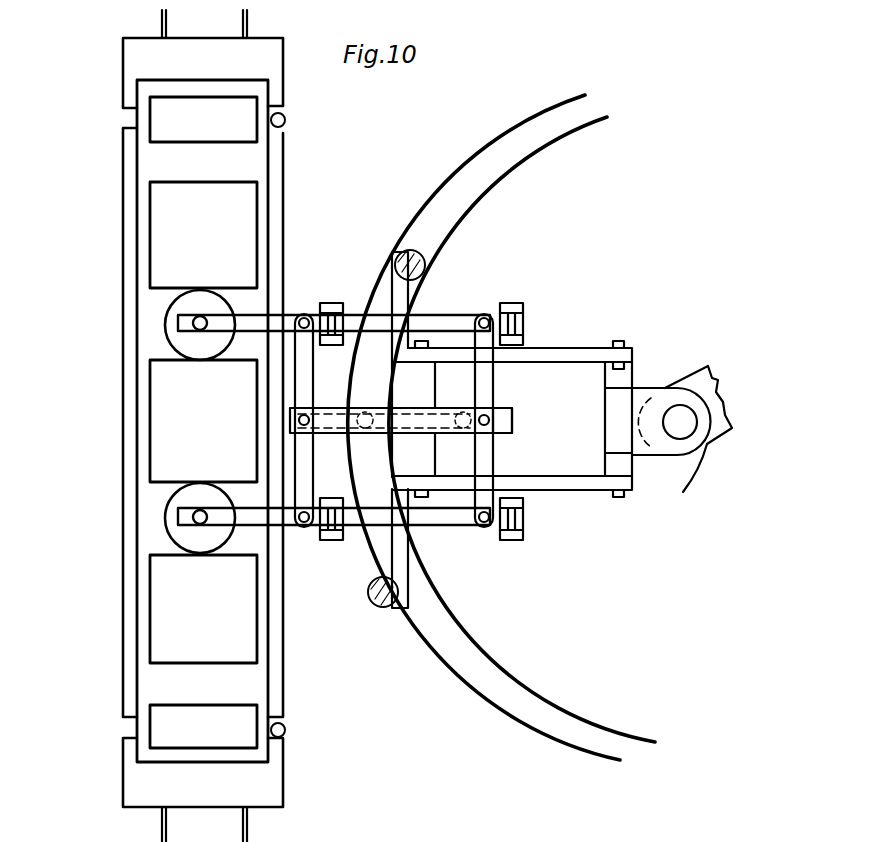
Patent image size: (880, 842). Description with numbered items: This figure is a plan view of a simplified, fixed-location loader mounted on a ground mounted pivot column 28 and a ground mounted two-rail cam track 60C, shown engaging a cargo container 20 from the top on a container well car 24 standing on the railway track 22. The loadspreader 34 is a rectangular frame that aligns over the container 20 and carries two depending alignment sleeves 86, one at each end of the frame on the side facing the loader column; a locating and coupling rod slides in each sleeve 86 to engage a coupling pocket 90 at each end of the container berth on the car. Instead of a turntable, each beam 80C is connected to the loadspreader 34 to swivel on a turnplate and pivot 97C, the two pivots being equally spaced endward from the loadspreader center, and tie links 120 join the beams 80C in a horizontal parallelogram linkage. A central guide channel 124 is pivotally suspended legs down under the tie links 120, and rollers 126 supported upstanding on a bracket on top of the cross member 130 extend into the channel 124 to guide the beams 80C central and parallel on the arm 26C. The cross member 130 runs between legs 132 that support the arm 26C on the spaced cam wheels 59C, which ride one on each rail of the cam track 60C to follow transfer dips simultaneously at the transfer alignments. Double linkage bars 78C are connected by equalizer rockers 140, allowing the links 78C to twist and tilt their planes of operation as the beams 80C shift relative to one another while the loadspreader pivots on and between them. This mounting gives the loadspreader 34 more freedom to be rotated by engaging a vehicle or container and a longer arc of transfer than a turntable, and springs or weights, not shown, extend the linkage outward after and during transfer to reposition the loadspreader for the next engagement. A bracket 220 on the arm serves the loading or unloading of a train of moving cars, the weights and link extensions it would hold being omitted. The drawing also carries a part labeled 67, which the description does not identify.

The railway track 22 is at (160, 22).
The container well car 24 is at (124, 65).
The coupling pocket 90 is at (128, 120).
The loadspreader 34 is at (124, 188).
The cargo container 20 is at (163, 249).
The alignment sleeve 86 is at (287, 118).
The turnplate and pivot 97C is at (168, 340).
The beam 80C is at (178, 325).
The tie link 120 is at (292, 312).
The equalizer rocker 140 is at (354, 303).
The leg 132 is at (423, 281).
The cross member 130 is at (410, 555).
The cam wheel 59C is at (424, 262).
The arm 67 is at (560, 350).
The roller 126 is at (475, 412).
The central guide channel 124 is at (513, 419).
The bracket 220 is at (642, 456).
The vertical column 28 is at (688, 417).
The double linkage bar 78C is at (525, 520).
The arm 26C is at (565, 538).
The two-rail cam track 60C is at (548, 703).